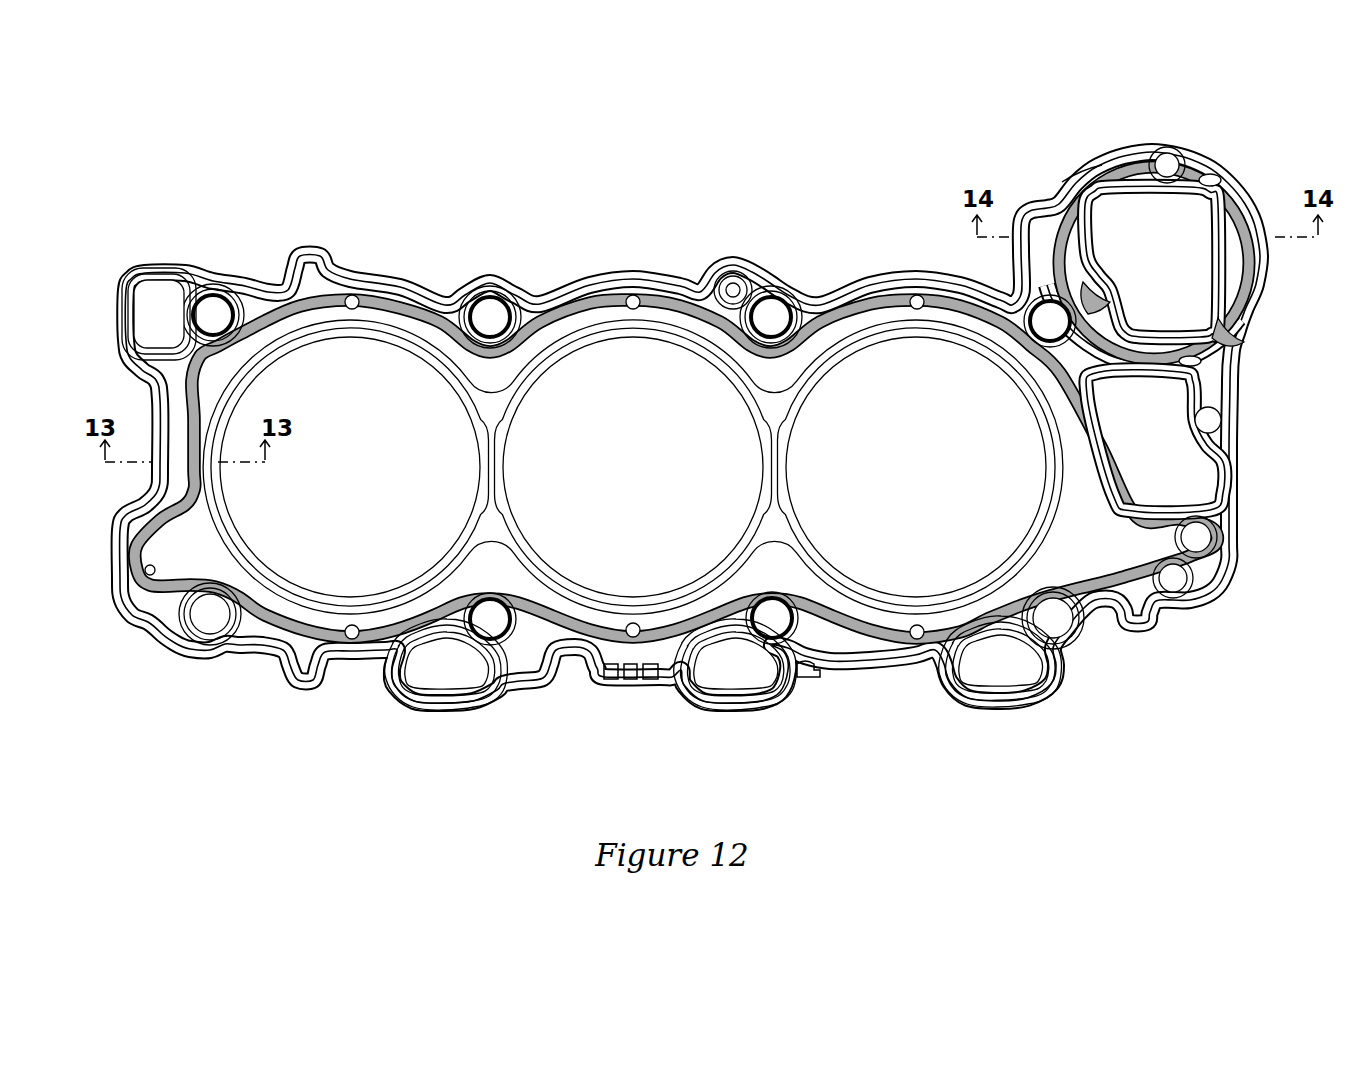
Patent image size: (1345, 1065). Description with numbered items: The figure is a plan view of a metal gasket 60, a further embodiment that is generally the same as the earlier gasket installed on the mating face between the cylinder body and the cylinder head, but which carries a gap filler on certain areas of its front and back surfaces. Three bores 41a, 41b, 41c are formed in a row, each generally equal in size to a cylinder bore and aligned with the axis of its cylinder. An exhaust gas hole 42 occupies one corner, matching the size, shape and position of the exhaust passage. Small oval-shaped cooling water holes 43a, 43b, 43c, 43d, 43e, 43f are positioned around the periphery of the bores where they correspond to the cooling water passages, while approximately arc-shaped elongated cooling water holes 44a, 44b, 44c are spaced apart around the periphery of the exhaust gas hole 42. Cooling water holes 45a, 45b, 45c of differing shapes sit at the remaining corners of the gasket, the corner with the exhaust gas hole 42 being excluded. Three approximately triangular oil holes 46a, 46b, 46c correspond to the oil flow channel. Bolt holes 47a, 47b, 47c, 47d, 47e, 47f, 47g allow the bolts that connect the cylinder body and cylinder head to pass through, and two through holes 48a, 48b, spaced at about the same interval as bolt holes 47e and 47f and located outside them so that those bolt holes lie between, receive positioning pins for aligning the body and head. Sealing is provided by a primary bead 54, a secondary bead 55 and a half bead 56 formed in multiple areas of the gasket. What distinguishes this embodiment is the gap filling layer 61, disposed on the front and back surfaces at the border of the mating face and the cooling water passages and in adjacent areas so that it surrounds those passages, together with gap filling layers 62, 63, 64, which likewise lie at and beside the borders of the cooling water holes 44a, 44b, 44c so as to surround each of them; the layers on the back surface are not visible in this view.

The metal gasket 60 is at (1252, 110).
The bore 41a is at (408, 356).
The bore 41b is at (689, 356).
The bore 41c is at (848, 356).
The exhaust gas hole 42 is at (1207, 297).
The cooling water hole 43a is at (352, 298).
The cooling water hole 43b is at (633, 299).
The cooling water hole 43c is at (915, 299).
The cooling water hole 43d is at (352, 640).
The cooling water hole 43e is at (633, 638).
The cooling water hole 43f is at (916, 640).
The cooling water hole 44a is at (1158, 164).
The cooling water hole 44b is at (1216, 180).
The cooling water hole 44c is at (1205, 363).
The cooling water hole 45a is at (165, 312).
The cooling water hole 45b is at (154, 570).
The cooling water hole 45c is at (1204, 540).
The oil hole 46a is at (445, 670).
The oil hole 46b is at (738, 670).
The oil hole 46c is at (1007, 668).
The bolt hole 47a is at (213, 313).
The bolt hole 47b is at (490, 315).
The bolt hole 47c is at (772, 318).
The bolt hole 47d is at (1048, 321).
The bolt hole 47e is at (500, 625).
The bolt hole 47f is at (772, 616).
The bolt hole 47g is at (1216, 422).
The through hole 48a is at (210, 632).
The through hole 48b is at (1058, 630).
The primary bead 54 is at (356, 329).
The secondary bead 55 is at (200, 497).
The half bead 56 is at (165, 496).
The gap filling layer 61 is at (275, 302).
The gap filling layer 62 is at (1086, 172).
The gap filling layer 63 is at (1260, 280).
The gap filling layer 64 is at (1225, 340).